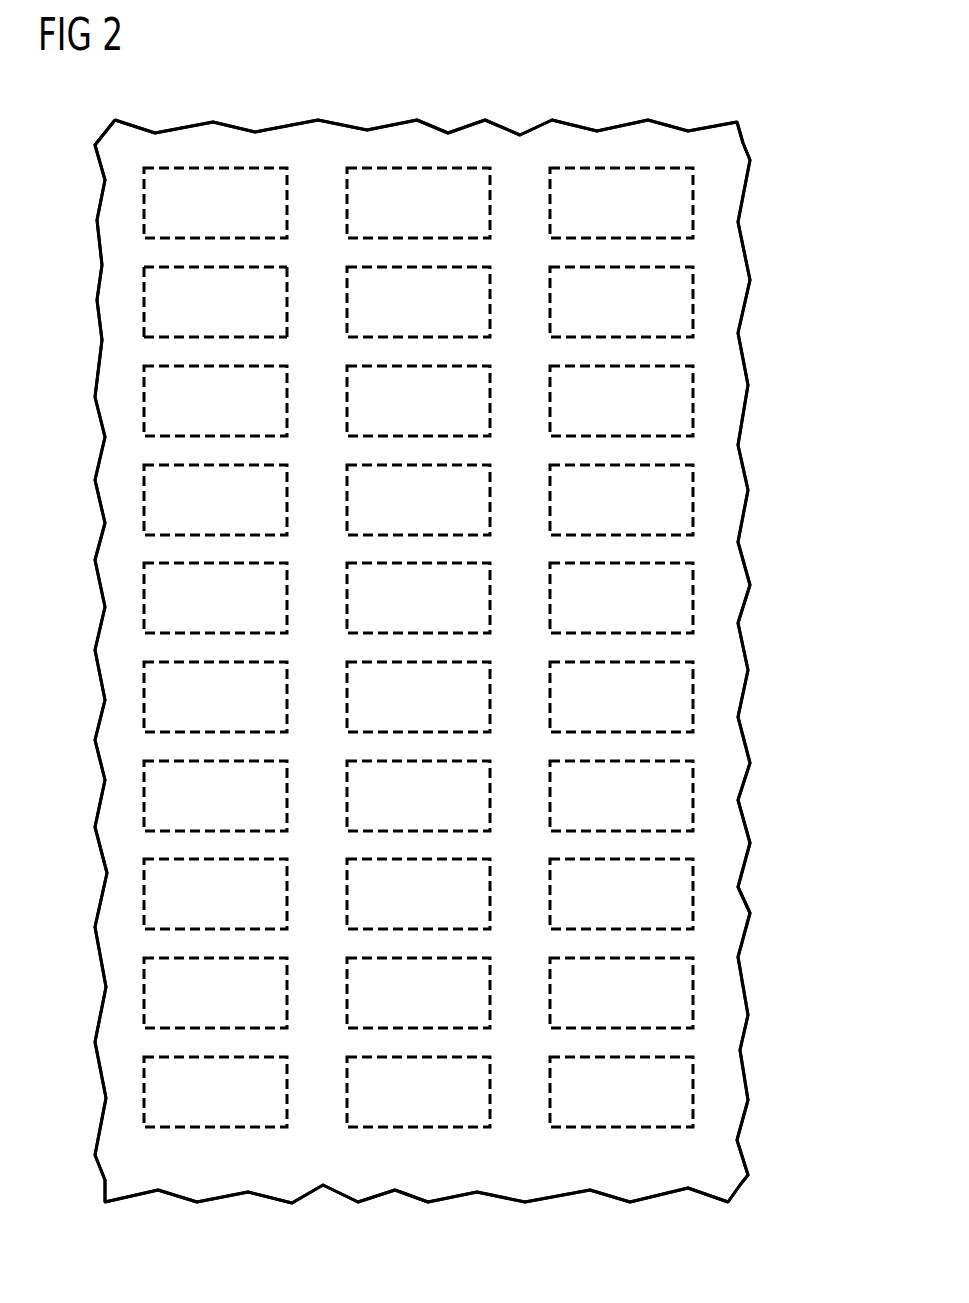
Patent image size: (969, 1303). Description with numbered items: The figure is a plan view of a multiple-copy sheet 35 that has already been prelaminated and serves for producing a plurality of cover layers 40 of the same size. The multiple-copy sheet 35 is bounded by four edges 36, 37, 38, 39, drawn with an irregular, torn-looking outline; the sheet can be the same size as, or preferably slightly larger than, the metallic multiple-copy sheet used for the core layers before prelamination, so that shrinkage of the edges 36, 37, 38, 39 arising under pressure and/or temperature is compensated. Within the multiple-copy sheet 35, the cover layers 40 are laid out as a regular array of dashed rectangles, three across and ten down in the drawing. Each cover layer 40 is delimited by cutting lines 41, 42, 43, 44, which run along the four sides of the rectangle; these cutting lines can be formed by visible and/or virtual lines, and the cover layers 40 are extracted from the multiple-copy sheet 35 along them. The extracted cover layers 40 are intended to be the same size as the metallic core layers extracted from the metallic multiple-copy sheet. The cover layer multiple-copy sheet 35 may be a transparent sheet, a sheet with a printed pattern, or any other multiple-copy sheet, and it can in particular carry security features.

The multiple-copy sheet 35 is at (741, 400).
The edge 36 is at (745, 157).
The edge 37 is at (610, 1196).
The edge 38 is at (98, 200).
The edge 39 is at (182, 126).
The cover layer 40 is at (676, 497).
The cutting line 41 is at (149, 268).
The cutting line 42 is at (144, 305).
The cutting line 43 is at (150, 340).
The cutting line 44 is at (289, 308).